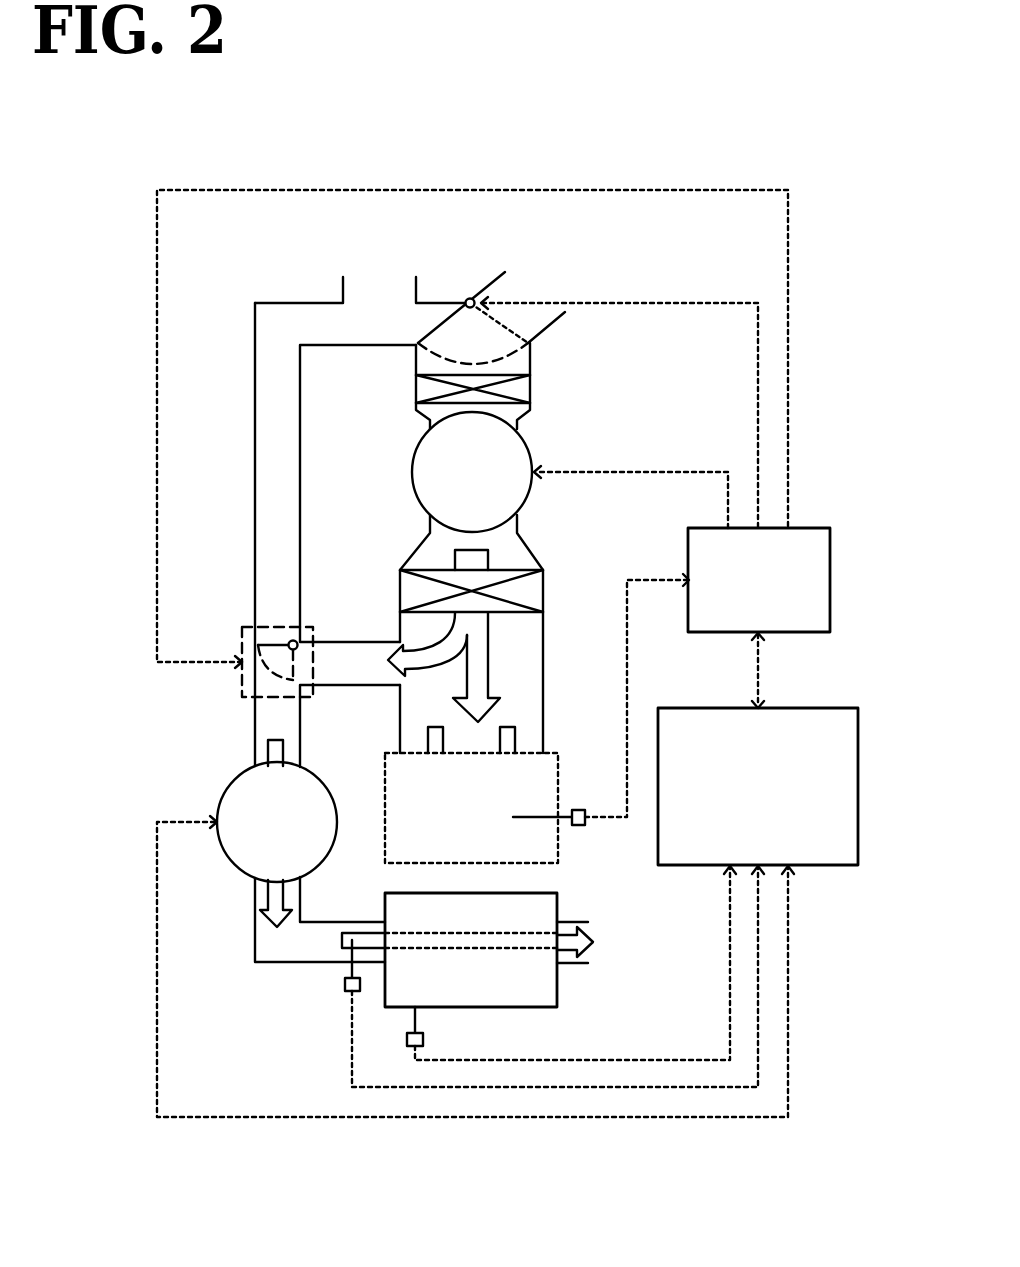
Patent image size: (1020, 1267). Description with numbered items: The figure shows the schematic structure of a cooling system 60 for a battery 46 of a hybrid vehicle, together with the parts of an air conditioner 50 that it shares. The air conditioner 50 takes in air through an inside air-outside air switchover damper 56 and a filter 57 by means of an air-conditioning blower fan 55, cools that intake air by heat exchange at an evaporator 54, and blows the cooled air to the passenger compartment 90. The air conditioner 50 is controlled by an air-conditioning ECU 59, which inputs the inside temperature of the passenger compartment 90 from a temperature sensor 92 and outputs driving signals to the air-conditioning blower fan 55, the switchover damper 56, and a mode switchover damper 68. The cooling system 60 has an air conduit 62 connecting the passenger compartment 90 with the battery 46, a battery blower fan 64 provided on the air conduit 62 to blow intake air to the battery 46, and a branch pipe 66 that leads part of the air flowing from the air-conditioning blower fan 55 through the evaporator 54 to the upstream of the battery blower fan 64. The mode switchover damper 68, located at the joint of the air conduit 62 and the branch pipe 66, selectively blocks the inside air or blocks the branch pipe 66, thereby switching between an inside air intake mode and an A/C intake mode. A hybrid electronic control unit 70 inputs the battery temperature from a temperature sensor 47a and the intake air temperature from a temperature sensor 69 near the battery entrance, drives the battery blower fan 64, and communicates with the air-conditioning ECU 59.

The cooling system 60 is at (630, 165).
The air conditioner 50 is at (645, 418).
The inside air-outside air switchover damper 56 is at (450, 320).
The filter 57 is at (532, 386).
The air-conditioning blower fan 55 is at (531, 451).
The evaporator 54 is at (398, 591).
The air-conditioning electronic control unit 59 is at (812, 527).
The hybrid electronic control unit 70 is at (817, 708).
The air conduit 62 is at (282, 520).
The mode switchover damper 68 is at (270, 640).
The branch pipe 66 is at (350, 660).
The battery blower fan 64 is at (235, 783).
The passenger compartment 90 is at (471, 808).
The temperature sensor 92 is at (578, 810).
The battery 46 is at (560, 903).
The temperature sensor 69 is at (345, 983).
The temperature sensor 47a is at (425, 1037).